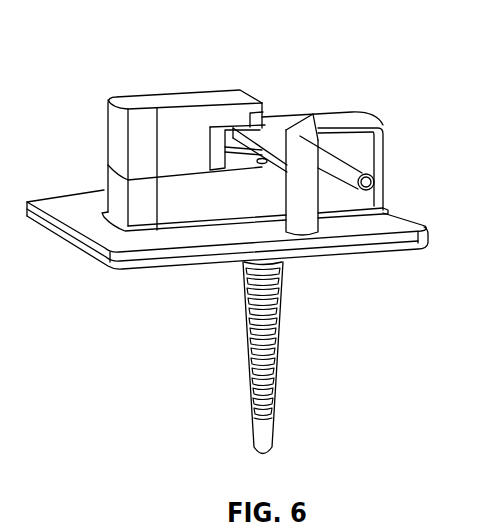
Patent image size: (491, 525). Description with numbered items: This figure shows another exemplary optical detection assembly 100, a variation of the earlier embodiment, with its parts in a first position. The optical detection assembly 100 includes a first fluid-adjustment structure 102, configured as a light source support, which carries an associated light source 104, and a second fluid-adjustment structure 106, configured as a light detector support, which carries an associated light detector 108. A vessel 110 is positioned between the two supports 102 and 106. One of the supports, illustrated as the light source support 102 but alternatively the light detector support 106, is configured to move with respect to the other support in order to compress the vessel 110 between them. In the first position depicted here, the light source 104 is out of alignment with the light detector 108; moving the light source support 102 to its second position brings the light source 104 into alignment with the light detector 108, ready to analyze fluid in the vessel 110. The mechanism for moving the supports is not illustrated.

The optical detection assembly 100 is at (343, 305).
The first fluid-adjustment structure 102 is at (152, 100).
The light source 104 is at (249, 129).
The second fluid-adjustment structure 106 is at (381, 148).
The light detector 108 is at (272, 148).
The vessel 110 is at (374, 184).